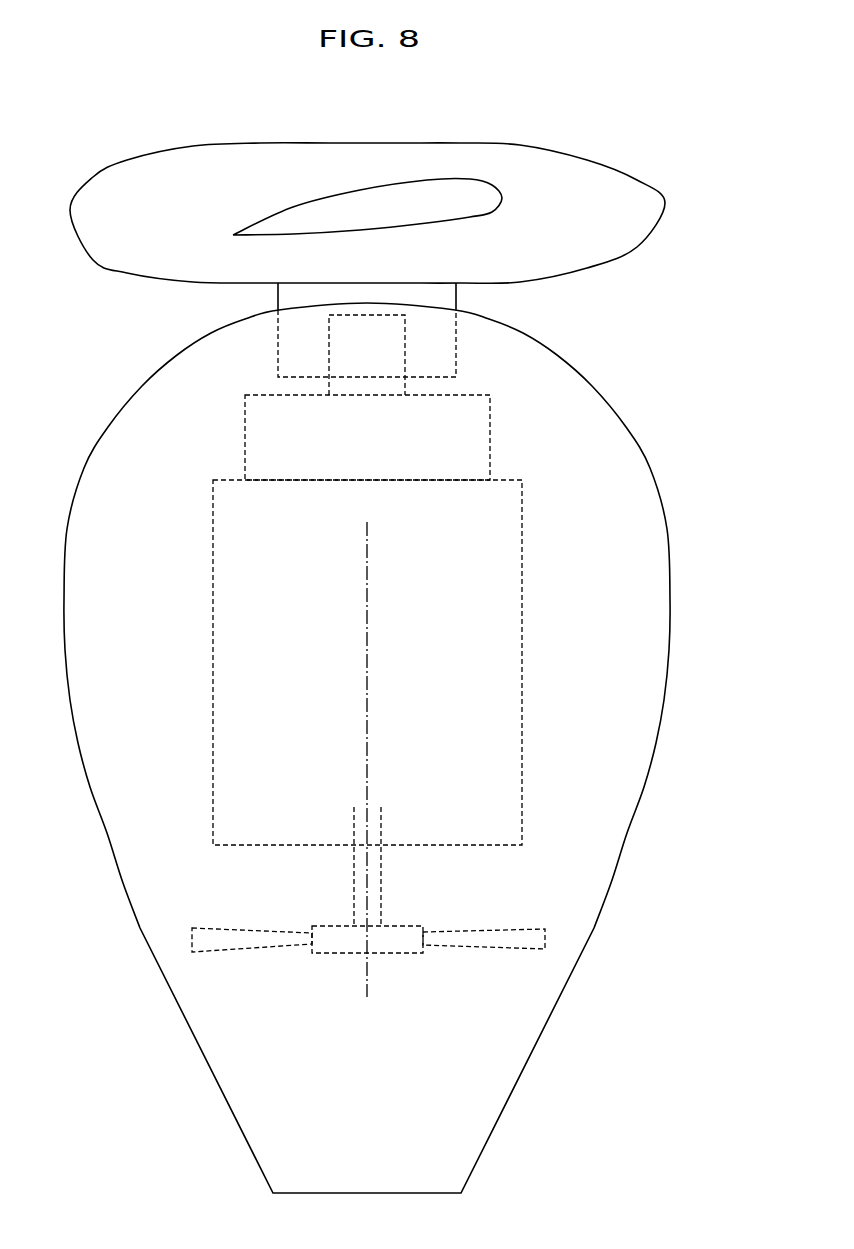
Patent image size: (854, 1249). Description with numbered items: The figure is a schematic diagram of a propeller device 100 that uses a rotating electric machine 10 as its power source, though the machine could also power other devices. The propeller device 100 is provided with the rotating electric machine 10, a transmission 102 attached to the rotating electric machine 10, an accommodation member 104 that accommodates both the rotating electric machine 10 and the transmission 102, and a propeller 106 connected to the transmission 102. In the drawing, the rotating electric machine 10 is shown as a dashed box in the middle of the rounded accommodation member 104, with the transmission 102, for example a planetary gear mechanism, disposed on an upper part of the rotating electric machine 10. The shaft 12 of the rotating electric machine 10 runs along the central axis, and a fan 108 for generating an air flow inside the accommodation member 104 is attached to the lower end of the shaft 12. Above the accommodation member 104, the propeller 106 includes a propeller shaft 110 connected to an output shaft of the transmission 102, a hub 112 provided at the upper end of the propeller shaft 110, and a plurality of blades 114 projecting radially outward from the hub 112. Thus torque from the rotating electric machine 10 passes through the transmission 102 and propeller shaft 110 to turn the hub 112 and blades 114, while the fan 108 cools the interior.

The propeller device 100 is at (163, 109).
The propeller 106 is at (516, 132).
The hub 112 is at (632, 208).
The blades 114 is at (359, 208).
The propeller shaft 110 is at (445, 302).
The accommodation member 104 is at (615, 407).
The transmission 102 is at (465, 393).
The rotating electric machine 10 is at (530, 605).
The shaft 12 is at (383, 814).
The fan 108 is at (387, 935).